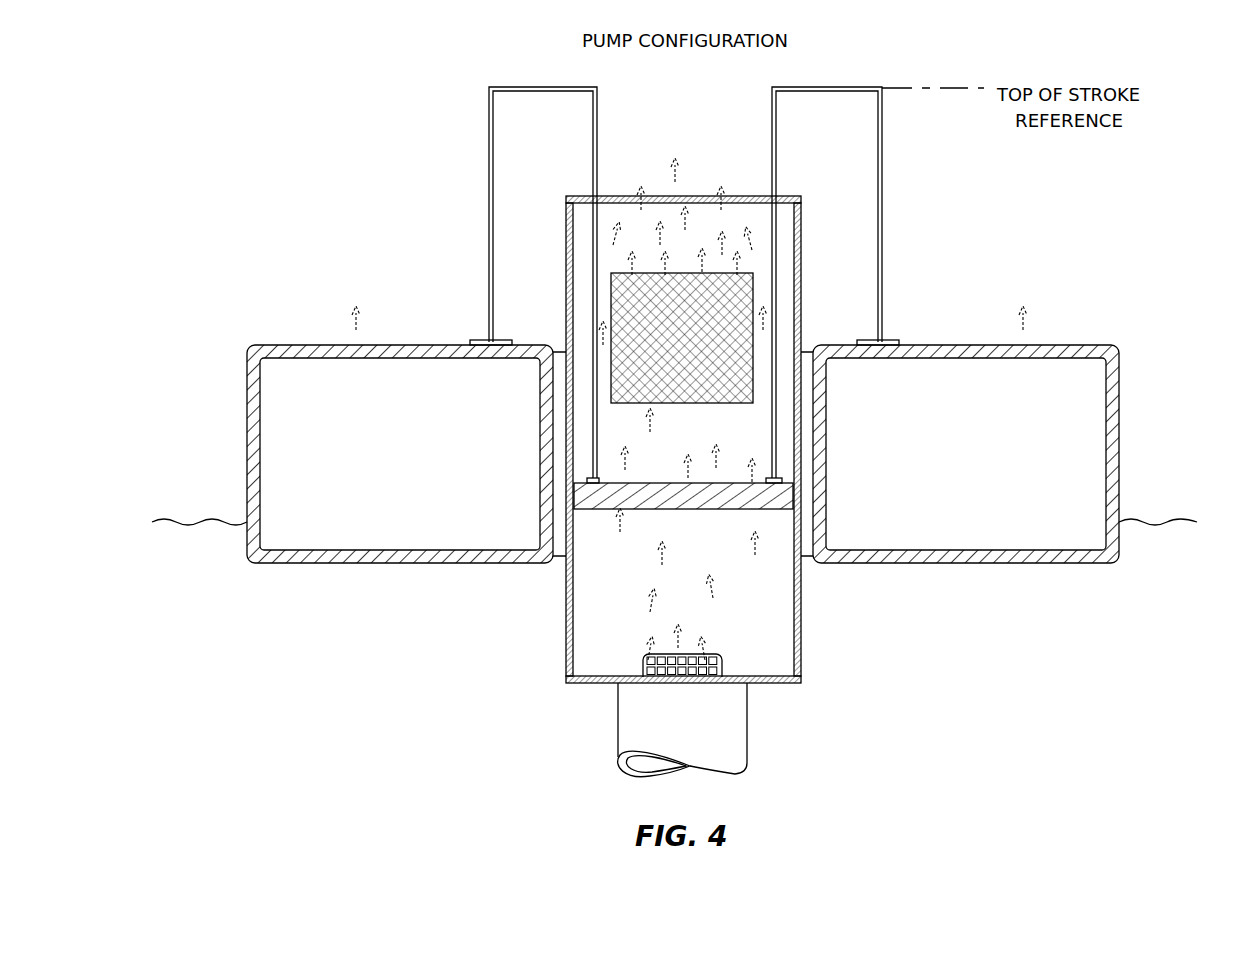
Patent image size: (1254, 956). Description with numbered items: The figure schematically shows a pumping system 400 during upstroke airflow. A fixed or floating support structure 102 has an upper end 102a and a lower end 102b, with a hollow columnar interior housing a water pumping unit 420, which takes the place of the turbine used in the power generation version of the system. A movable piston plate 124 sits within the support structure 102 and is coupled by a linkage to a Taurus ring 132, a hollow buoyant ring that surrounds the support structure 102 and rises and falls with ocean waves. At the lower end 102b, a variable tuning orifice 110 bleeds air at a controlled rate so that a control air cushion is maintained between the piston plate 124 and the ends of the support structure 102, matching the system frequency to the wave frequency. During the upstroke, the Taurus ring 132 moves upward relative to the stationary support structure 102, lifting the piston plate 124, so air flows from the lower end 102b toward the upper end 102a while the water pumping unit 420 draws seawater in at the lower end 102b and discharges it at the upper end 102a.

The pumping system 400 is at (180, 98).
The support structure 102 is at (566, 622).
The upper end 102a is at (792, 197).
The lower end 102b is at (800, 684).
The water pumping unit 420 is at (683, 405).
The piston plate 124 is at (660, 512).
The variable tuning orifice 110 is at (722, 662).
The Taurus ring 132 is at (1010, 564).